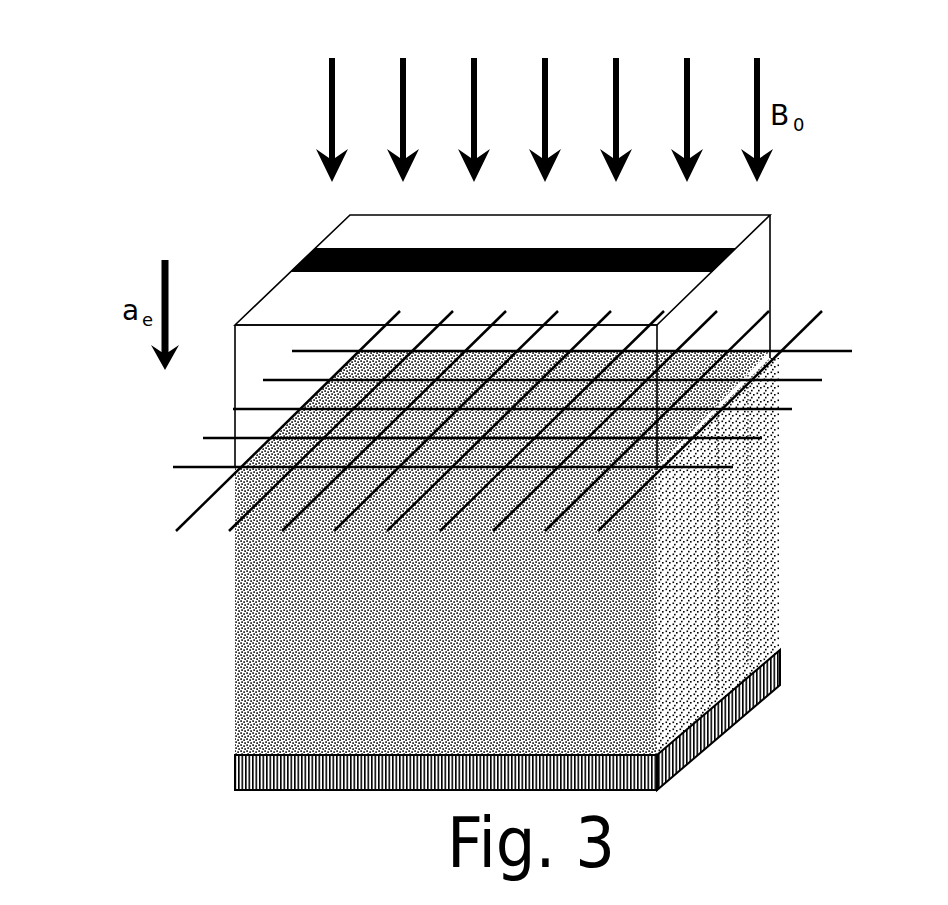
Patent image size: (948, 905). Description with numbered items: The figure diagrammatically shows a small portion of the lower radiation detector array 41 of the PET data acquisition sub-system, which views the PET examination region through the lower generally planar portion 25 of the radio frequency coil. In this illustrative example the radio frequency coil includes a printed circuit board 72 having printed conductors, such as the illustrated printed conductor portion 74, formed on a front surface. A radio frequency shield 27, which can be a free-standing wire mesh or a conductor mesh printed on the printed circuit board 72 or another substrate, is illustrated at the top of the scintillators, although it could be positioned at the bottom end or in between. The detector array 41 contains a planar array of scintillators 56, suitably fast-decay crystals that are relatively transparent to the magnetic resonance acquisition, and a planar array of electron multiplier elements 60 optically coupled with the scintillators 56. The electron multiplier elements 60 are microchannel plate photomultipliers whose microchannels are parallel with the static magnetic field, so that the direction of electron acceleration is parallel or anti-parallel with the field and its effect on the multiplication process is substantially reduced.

The lower generally planar portion of the radio frequency coil 25 is at (796, 213).
The radio frequency shield 27 is at (803, 325).
The lower radiation detector array 41 is at (134, 608).
The scintillators 56 is at (705, 565).
The electron multiplier elements 60 is at (762, 712).
The printed circuit board 72 is at (770, 270).
The printed conductor portion 74 is at (425, 249).